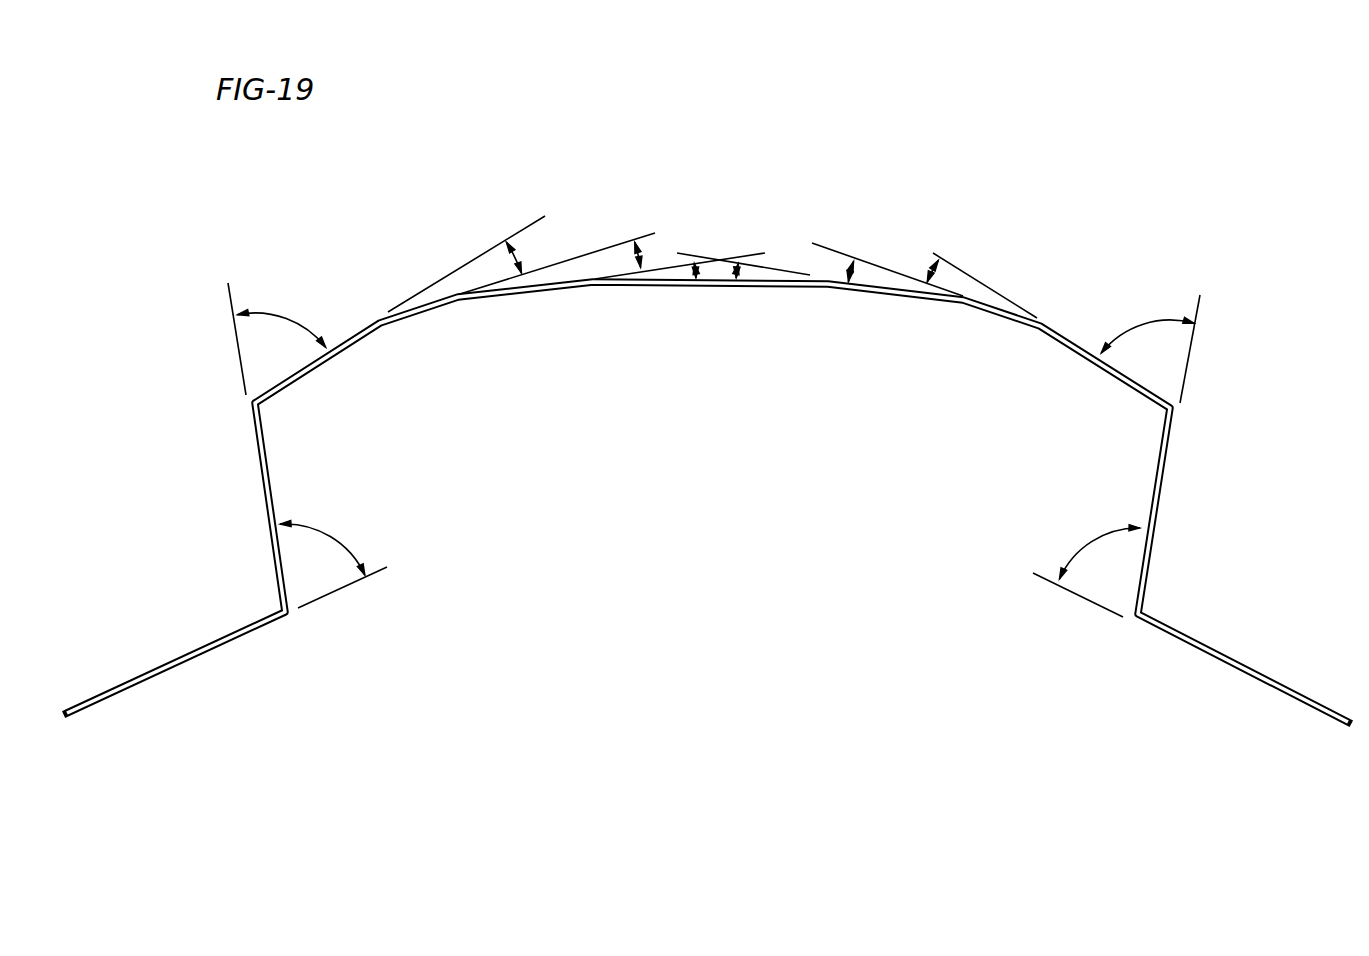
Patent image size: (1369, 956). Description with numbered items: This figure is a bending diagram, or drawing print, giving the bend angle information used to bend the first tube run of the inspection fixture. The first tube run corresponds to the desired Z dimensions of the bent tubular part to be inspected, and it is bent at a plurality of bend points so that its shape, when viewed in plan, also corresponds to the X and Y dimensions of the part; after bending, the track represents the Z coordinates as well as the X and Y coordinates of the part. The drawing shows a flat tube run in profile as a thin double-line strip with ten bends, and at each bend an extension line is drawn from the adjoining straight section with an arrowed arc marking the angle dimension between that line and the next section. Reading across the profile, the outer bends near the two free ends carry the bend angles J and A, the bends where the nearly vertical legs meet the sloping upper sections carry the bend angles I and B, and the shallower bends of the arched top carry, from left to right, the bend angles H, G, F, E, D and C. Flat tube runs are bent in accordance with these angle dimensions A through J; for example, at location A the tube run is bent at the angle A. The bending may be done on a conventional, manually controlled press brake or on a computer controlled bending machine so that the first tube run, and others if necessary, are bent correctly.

The bend angle A is at (1086, 571).
The bend angle B is at (1150, 349).
The bend angle C is at (982, 272).
The bend angle D is at (887, 261).
The bend angle E is at (743, 289).
The bend angle F is at (680, 289).
The bend angle G is at (557, 255).
The bend angle H is at (466, 264).
The bend angle I is at (277, 339).
The bend angle J is at (333, 564).